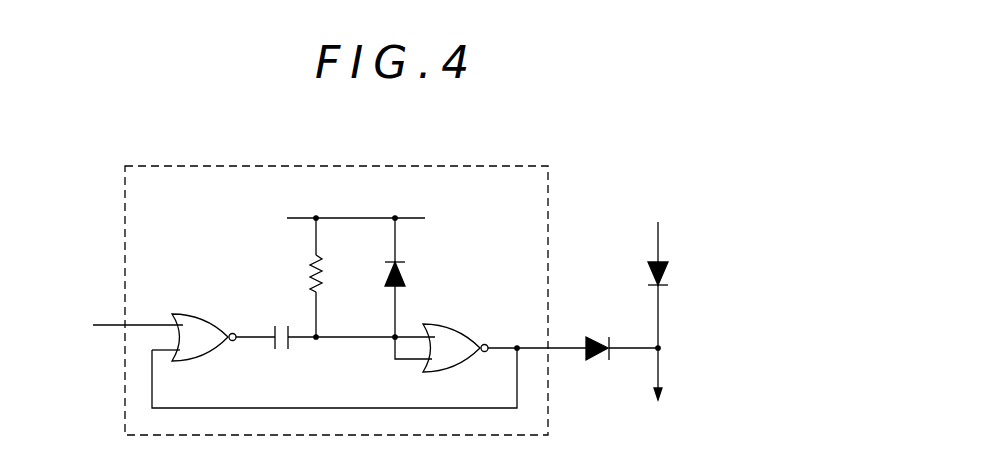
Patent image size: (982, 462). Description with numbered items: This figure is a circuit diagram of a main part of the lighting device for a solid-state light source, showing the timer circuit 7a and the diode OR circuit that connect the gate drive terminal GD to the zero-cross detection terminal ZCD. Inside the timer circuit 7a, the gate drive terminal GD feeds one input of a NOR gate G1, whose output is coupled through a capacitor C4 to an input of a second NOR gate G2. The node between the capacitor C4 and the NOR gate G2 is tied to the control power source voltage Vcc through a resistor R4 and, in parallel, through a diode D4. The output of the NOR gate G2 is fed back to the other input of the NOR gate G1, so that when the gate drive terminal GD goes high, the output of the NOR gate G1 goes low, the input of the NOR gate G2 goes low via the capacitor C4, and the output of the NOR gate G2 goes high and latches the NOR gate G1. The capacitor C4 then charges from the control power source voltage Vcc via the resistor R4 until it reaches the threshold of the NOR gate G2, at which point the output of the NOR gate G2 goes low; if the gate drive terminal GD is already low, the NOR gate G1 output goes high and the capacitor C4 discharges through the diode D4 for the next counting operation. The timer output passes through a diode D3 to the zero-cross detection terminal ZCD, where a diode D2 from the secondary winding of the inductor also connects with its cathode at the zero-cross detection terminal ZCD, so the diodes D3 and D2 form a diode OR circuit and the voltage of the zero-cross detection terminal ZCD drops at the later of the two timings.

The timer circuit 7a is at (422, 166).
The gate drive terminal GD is at (117, 326).
The NOR gate G1 is at (213, 325).
The capacitor C4 is at (331, 326).
The control power source voltage Vcc is at (356, 203).
The resistor R4 is at (298, 278).
The diode D4 is at (377, 278).
The NOR gate G2 is at (369, 352).
The diode D3 is at (619, 334).
The diode D2 is at (673, 285).
The zero-cross detection terminal ZCD is at (655, 388).